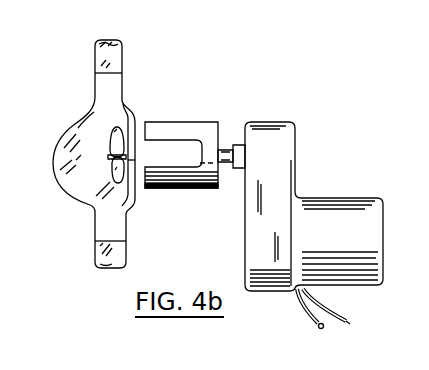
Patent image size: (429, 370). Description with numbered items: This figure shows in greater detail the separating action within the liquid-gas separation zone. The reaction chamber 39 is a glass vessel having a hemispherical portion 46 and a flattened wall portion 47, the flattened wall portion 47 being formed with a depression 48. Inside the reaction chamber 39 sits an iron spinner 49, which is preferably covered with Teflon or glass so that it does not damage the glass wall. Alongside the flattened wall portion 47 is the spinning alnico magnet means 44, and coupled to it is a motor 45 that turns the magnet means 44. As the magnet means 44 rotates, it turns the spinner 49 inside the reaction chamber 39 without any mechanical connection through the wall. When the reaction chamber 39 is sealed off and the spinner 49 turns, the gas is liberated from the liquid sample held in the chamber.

The reaction chamber 39 is at (93, 106).
The spinning alnico magnet means 44 is at (210, 189).
The motor 45 is at (332, 208).
The hemispherical portion 46 is at (62, 190).
The flattened wall portion 47 is at (134, 117).
The depression 48 is at (136, 168).
The iron spinner 49 is at (108, 138).